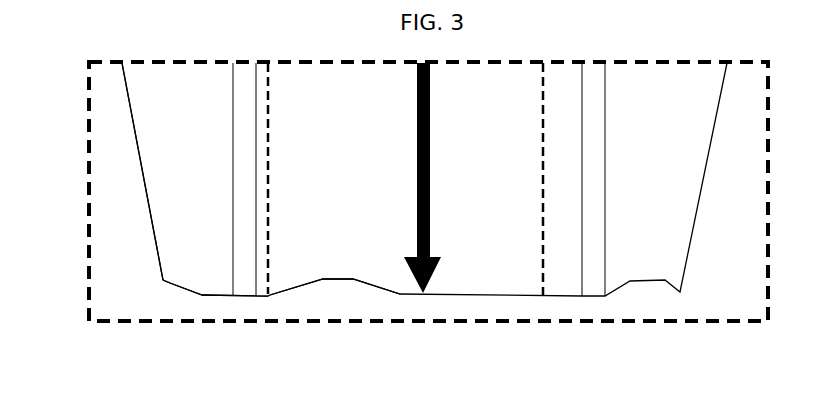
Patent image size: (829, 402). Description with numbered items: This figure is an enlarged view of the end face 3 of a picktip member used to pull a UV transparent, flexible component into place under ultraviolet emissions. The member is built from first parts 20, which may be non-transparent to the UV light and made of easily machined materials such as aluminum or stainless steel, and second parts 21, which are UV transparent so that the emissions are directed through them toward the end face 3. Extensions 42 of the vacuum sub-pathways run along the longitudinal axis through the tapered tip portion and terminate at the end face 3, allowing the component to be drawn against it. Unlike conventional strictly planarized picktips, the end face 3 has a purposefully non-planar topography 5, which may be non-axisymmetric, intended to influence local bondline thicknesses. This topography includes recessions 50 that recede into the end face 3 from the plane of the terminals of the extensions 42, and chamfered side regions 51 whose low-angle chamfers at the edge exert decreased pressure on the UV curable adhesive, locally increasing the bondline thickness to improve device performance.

The end face 3 is at (180, 205).
The first parts 20 is at (187, 129).
The second parts 21 is at (324, 129).
The extensions 42 is at (240, 239).
The chamfered side regions 51 is at (170, 286).
The non-planar topography 5 is at (275, 296).
The recessions 50 is at (350, 282).